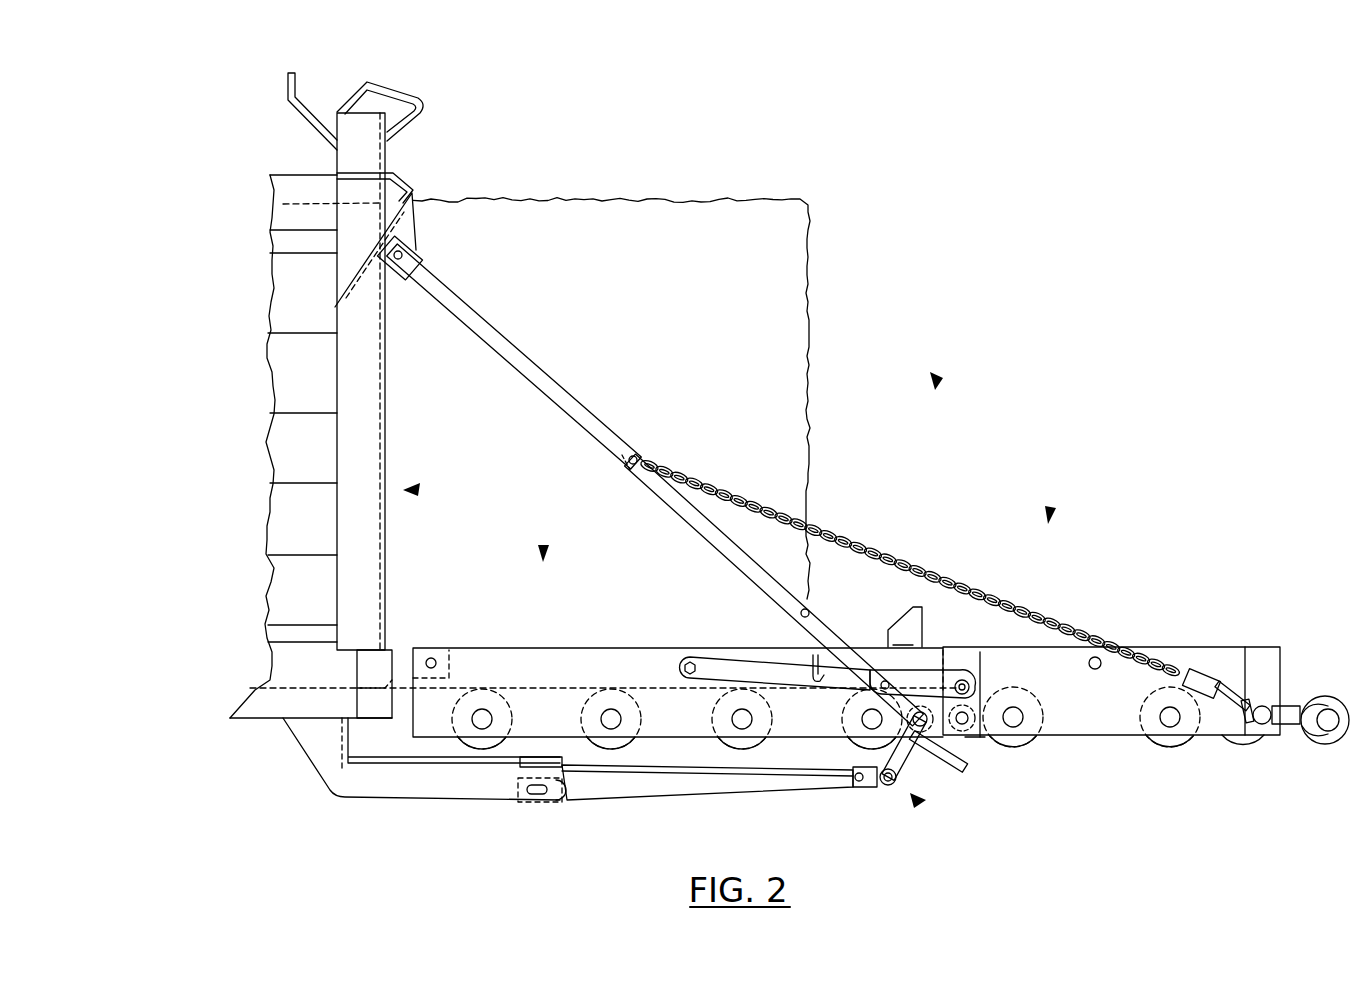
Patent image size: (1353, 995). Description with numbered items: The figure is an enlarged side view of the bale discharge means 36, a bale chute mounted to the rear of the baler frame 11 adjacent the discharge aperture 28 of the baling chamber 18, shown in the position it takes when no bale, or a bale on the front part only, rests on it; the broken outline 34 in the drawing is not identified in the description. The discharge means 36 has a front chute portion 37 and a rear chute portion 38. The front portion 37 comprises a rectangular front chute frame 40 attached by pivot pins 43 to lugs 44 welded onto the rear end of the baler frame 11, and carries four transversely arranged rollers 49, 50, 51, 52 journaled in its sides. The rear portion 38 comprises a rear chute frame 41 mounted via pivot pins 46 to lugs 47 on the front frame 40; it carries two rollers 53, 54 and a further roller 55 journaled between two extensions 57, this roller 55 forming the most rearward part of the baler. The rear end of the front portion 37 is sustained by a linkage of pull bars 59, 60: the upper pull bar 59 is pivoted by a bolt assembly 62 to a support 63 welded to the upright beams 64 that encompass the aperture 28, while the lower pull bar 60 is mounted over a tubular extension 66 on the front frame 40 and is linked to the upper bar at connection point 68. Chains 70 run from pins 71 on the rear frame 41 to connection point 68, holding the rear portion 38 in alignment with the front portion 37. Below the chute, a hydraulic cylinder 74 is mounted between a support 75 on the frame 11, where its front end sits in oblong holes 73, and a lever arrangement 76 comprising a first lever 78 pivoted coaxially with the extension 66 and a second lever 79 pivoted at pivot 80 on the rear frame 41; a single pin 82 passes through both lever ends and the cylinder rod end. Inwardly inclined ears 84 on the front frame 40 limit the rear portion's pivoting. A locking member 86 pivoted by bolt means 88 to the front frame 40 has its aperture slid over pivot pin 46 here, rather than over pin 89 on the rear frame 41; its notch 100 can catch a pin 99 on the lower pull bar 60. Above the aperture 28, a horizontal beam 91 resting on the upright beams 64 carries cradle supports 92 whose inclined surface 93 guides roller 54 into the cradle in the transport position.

The baler frame 11 is at (263, 706).
The baling chamber 18 is at (293, 175).
The discharge aperture 28 is at (415, 490).
The opening boundary 34 is at (797, 270).
The bale discharge means 36 is at (936, 382).
The front chute portion 37 is at (543, 548).
The rear chute portion 38 is at (1050, 510).
The front chute frame 40 is at (585, 648).
The rear chute frame 41 is at (1168, 645).
The pivot pins 43 is at (435, 658).
The lugs 44 is at (392, 657).
The pivot pins 46 is at (965, 682).
The lugs 47 is at (955, 653).
The roller 49 is at (500, 700).
The roller 50 is at (638, 700).
The roller 51 is at (772, 725).
The roller 52 is at (843, 718).
The roller 53 is at (1035, 742).
The roller 54 is at (1162, 742).
The roller 55 is at (1330, 745).
The extensions 57 is at (1280, 700).
The upper pull bar 59 is at (550, 385).
The lower pull bar 60 is at (678, 508).
The bolt assembly 62 is at (405, 258).
The support 63 is at (417, 180).
The upright beams 64 is at (337, 432).
The tubular extension 66 is at (948, 752).
The connection point 68 is at (636, 452).
The chains 70 is at (862, 543).
The pins 71 is at (1240, 740).
The oblong holes 73 is at (548, 800).
The hydraulic cylinder 74 is at (710, 788).
The support 75 is at (420, 790).
The lever arrangement 76 is at (918, 802).
The first lever 78 is at (910, 747).
The second lever 79 is at (968, 727).
The pivot 80 is at (975, 738).
The pin 82 is at (889, 788).
The ears 84 is at (882, 668).
The locking member 86 is at (718, 660).
The bolt means 88 is at (688, 662).
The pin 89 is at (1097, 656).
The horizontal beam 91 is at (365, 123).
The cradle supports 92 is at (335, 103).
The inclined surface 93 is at (423, 101).
The pin 99 is at (812, 614).
The notch 100 is at (808, 660).